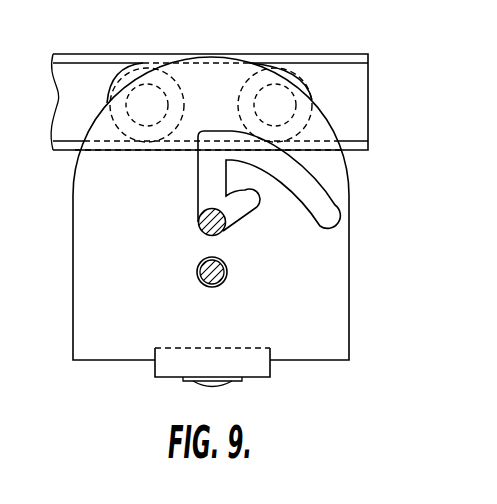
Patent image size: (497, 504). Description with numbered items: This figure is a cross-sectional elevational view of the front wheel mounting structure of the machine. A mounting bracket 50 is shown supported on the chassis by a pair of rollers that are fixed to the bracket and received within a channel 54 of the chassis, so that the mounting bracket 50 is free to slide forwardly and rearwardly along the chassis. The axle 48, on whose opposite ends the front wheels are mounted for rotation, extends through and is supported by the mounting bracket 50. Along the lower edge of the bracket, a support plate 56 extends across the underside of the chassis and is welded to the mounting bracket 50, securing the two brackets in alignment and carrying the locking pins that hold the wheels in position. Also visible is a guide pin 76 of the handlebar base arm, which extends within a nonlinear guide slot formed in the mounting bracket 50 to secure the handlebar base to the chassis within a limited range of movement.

The axle 48 is at (210, 272).
The mounting bracket 50 is at (92, 328).
The channel 54 is at (353, 117).
The support plate 56 is at (253, 370).
The guide pin 76 is at (200, 230).